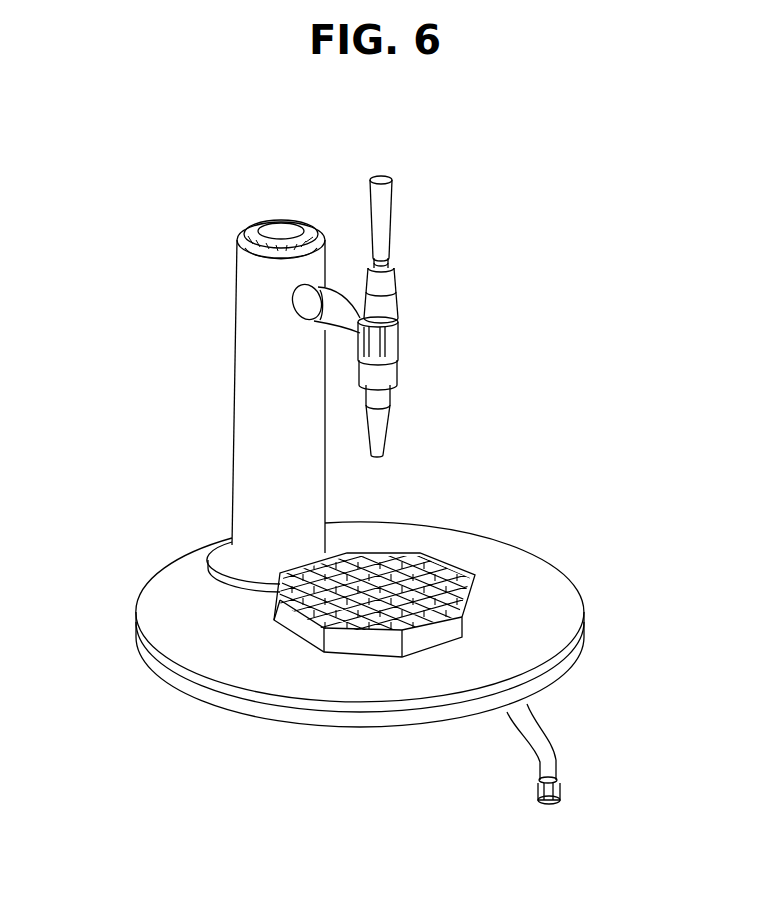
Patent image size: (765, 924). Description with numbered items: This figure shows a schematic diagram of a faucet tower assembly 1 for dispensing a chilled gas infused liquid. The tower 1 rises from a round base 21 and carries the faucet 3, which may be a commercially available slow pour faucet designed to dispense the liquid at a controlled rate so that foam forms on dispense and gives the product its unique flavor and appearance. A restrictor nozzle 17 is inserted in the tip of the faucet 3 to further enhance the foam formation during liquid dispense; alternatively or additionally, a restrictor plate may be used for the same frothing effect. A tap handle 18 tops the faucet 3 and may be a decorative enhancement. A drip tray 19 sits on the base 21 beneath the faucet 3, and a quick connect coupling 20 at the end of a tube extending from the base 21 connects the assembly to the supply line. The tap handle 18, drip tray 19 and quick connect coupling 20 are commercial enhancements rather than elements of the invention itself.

The beverage dispensing tower 1 is at (237, 260).
The faucet 3 is at (402, 322).
The restrictor nozzle 17 is at (386, 425).
The tap handle 18 is at (396, 182).
The drip tray 19 is at (464, 585).
The quick connect coupling 20 is at (562, 793).
The base 21 is at (163, 680).